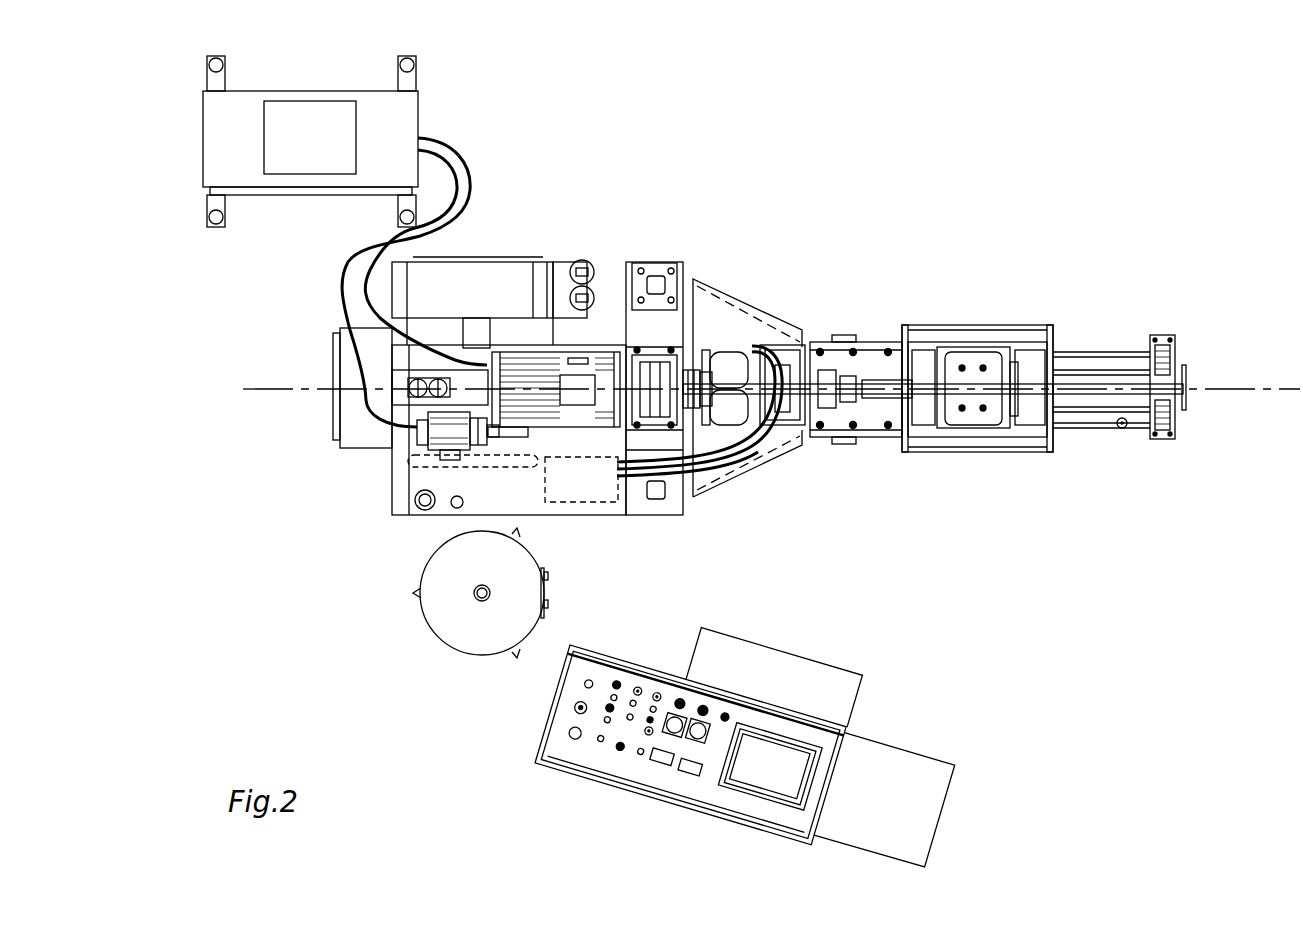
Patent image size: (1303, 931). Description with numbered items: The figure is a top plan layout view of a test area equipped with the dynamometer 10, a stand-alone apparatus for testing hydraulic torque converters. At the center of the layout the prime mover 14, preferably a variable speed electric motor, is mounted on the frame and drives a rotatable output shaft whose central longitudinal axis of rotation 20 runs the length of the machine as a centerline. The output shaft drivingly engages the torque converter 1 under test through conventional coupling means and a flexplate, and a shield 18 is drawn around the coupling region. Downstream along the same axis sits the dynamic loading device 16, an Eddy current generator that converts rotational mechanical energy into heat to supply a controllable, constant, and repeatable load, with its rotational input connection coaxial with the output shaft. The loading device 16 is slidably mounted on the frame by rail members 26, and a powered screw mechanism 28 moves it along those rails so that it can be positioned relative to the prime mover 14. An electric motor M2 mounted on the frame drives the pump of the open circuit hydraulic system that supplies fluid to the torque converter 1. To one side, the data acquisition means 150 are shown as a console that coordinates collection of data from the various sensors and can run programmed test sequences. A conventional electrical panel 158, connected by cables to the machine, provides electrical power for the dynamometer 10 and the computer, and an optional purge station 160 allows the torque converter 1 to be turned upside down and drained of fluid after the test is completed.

The dynamometer 10 is at (1000, 228).
The torque converter 1 is at (740, 355).
The prime mover 14 is at (522, 350).
The dynamic loading device 16 is at (978, 330).
The output shaft 18 is at (727, 350).
The central longitudinal axis of rotation 20 is at (288, 388).
The rail member 26 is at (1125, 370).
The powered screw mechanism 28 is at (1065, 378).
The electric motor M2 is at (392, 447).
The data acquisition means 150 is at (713, 730).
The electrical panel 158 is at (418, 125).
The purge station 160 is at (427, 570).